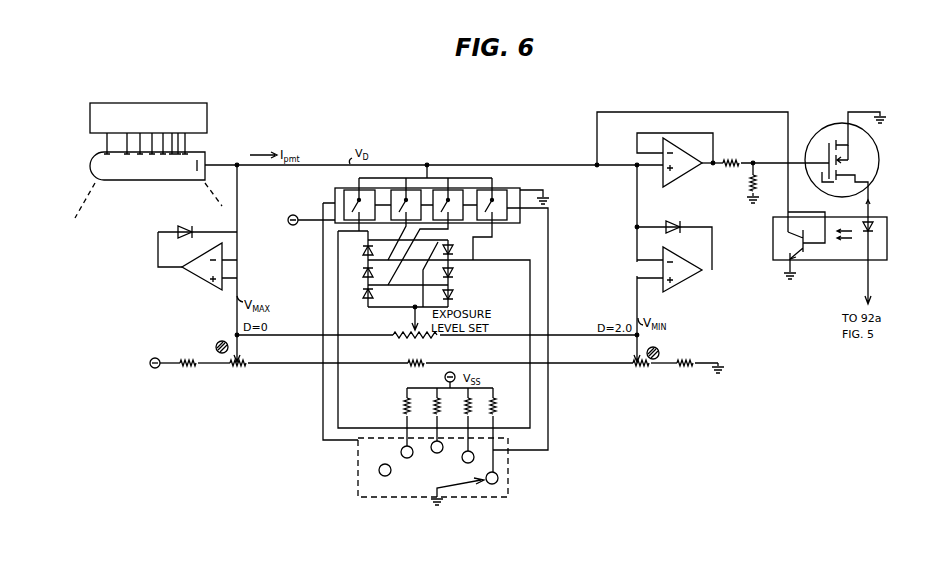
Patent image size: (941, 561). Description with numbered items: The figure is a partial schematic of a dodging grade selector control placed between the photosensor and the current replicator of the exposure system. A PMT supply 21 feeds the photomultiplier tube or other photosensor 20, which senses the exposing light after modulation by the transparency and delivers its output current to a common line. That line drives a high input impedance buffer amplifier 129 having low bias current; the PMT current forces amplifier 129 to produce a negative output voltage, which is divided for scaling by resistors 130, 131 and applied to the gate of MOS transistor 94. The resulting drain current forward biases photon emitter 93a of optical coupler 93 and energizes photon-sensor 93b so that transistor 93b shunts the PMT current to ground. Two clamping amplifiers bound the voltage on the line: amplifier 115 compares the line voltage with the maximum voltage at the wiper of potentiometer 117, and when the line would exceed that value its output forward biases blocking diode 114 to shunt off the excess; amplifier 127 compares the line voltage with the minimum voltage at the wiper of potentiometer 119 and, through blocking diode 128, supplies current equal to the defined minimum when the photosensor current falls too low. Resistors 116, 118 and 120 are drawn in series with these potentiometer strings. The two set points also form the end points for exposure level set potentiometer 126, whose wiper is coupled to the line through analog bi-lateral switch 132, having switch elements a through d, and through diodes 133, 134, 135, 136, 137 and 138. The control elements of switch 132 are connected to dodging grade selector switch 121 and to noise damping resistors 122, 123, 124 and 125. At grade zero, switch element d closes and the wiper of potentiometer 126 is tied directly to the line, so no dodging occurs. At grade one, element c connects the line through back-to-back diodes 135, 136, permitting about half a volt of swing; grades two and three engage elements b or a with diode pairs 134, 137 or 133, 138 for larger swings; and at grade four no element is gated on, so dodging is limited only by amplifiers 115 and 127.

The PMT supply 21 is at (219, 90).
The photosensor 20 is at (185, 181).
The blocking diode 114 is at (190, 228).
The clamping amplifier 115 is at (191, 277).
The input terminal resistor 116 is at (182, 357).
The potentiometer 117 is at (239, 368).
The resistor 118 is at (427, 364).
The potentiometer 119 is at (639, 368).
The resistor 120 is at (688, 368).
The dodging grade selector switch 121 is at (471, 498).
The noise damping resistor 122 is at (497, 402).
The noise damping resistor 123 is at (466, 402).
The noise damping resistor 124 is at (435, 401).
The noise damping resistor 125 is at (403, 401).
The exposure level set potentiometer 126 is at (400, 339).
The clamping amplifier 127 is at (693, 285).
The blocking diode 128 is at (681, 222).
The buffer amplifier 129 is at (684, 181).
The resistor 130 is at (546, 190).
The resistor 131 is at (290, 224).
The analog bi-lateral switch 132 is at (498, 186).
The diode 133 is at (363, 250).
The diode 134 is at (363, 275).
The diode 135 is at (366, 298).
The diode 136 is at (455, 296).
The diode 137 is at (454, 273).
The diode 138 is at (455, 250).
The MOS transistor 94 is at (876, 157).
The optical coupler 93 is at (836, 248).
The photon emitter 93a is at (865, 235).
The photon-sensor 93b is at (808, 253).